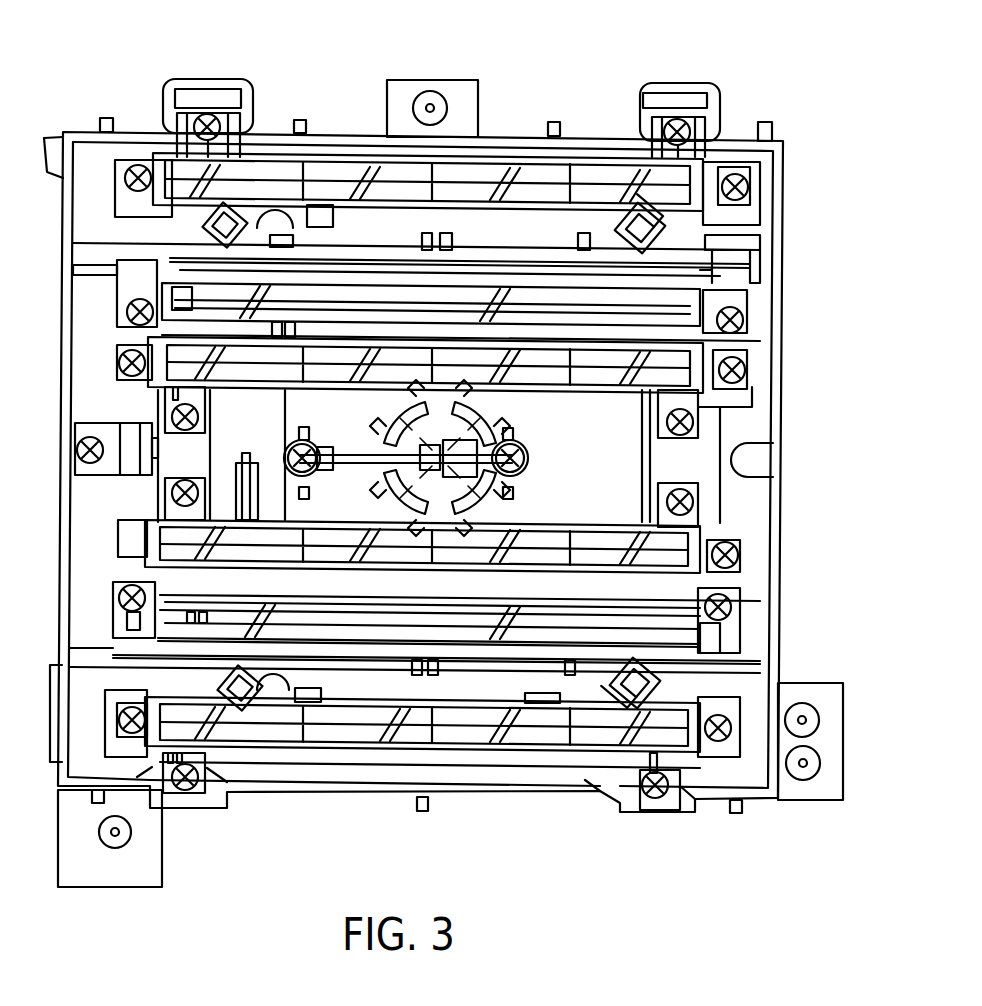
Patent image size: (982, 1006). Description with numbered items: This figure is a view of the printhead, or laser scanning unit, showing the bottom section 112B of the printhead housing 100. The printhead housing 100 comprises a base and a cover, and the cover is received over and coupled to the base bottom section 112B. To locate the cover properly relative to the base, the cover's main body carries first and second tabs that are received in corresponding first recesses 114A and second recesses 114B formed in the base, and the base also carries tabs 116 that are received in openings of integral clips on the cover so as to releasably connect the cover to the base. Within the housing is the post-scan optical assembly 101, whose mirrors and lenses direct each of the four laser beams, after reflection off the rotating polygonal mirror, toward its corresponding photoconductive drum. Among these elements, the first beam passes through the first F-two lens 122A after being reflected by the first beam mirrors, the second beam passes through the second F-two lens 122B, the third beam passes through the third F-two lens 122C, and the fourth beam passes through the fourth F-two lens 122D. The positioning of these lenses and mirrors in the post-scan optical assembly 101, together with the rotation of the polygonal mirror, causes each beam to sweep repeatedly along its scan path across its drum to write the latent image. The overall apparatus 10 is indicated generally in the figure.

The apparatus 10 is at (52, 771).
The printhead housing 100 is at (502, 803).
The post-scan optical assembly 101 is at (757, 232).
The bottom section 112B is at (307, 769).
The first recesses 114A is at (208, 108).
The second recesses 114B is at (211, 806).
The tabs 116 is at (108, 120).
The first F-2 lens 122A is at (483, 195).
The second F-2 lens 122B is at (590, 374).
The third F-2 lens 122C is at (393, 737).
The fourth F-2 lens 122D is at (588, 542).